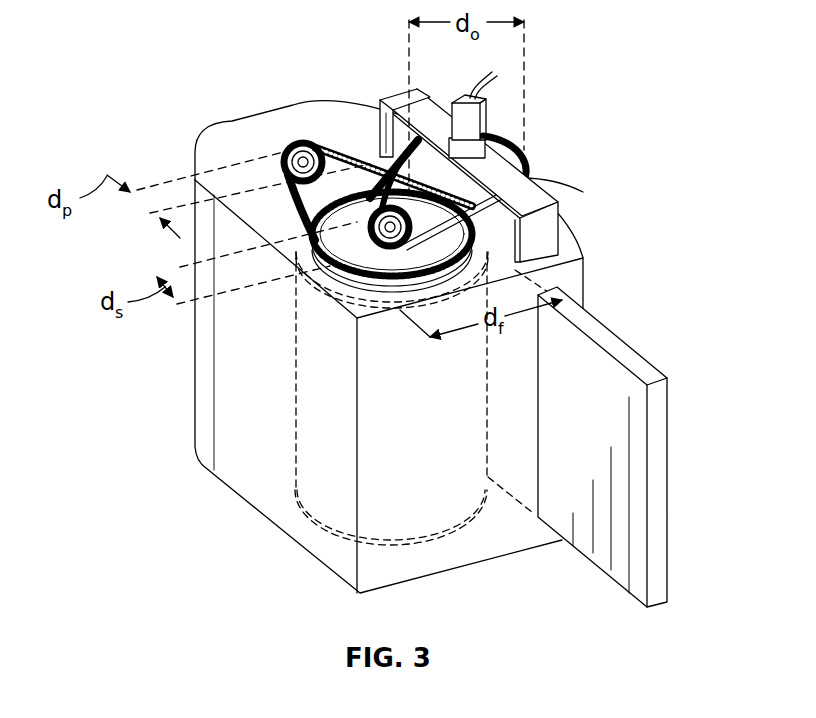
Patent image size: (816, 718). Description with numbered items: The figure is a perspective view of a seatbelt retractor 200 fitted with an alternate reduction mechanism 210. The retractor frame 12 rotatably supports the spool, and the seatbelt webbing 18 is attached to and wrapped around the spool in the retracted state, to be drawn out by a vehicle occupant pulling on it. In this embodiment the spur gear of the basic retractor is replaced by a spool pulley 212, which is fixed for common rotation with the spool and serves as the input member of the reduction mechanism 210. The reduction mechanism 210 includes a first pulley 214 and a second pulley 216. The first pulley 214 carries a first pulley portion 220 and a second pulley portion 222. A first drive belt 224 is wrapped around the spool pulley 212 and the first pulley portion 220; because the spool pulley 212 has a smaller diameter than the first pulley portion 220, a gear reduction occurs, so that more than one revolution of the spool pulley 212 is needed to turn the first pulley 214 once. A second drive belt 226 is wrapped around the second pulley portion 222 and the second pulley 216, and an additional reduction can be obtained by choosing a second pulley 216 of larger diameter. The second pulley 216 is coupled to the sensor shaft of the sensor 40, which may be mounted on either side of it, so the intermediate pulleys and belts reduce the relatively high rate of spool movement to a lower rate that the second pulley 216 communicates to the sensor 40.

The retractor frame 12 is at (290, 540).
The seatbelt webbing 18 is at (612, 342).
The sensor 40 is at (462, 104).
The seatbelt retractor 200 is at (622, 82).
The alternate reduction mechanism 210 is at (318, 283).
The spool pulley 212 is at (290, 152).
The first pulley 214 is at (560, 210).
The second pulley 216 is at (525, 163).
The first pulley portion 220 is at (500, 203).
The second pulley portion 222 is at (352, 157).
The first drive belt 224 is at (293, 200).
The second drive belt 226 is at (377, 130).